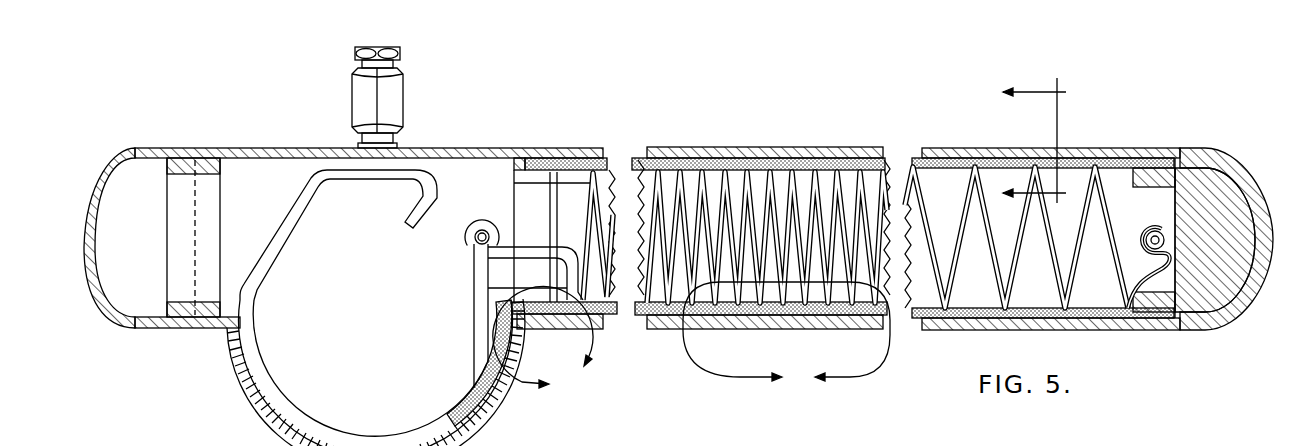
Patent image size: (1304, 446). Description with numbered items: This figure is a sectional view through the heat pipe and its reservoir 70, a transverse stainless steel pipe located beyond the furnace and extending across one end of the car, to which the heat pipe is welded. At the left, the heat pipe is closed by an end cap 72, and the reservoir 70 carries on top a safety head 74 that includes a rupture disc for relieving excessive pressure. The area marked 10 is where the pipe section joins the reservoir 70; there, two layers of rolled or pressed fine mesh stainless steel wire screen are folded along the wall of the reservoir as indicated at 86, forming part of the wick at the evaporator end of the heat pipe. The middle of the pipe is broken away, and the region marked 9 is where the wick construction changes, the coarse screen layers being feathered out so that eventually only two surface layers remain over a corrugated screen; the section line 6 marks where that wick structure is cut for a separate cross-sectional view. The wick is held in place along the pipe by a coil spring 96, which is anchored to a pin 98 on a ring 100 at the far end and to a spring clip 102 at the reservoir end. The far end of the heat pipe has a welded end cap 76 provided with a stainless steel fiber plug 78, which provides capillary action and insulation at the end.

The section line 6— 6 is at (1046, 143).
The region 9 is at (786, 337).
The area 10 is at (543, 337).
The reservoir 70 is at (483, 412).
The end cap 72 is at (113, 165).
The safety head 74 is at (352, 94).
The welded end cap 76 is at (1217, 158).
The stainless steel fiber plug 78 is at (1227, 203).
The folded screen 86 is at (453, 423).
The coil spring 96 is at (1097, 172).
The pin 98 is at (1160, 228).
The ring 100 is at (1150, 177).
The spring clip 102 is at (279, 250).